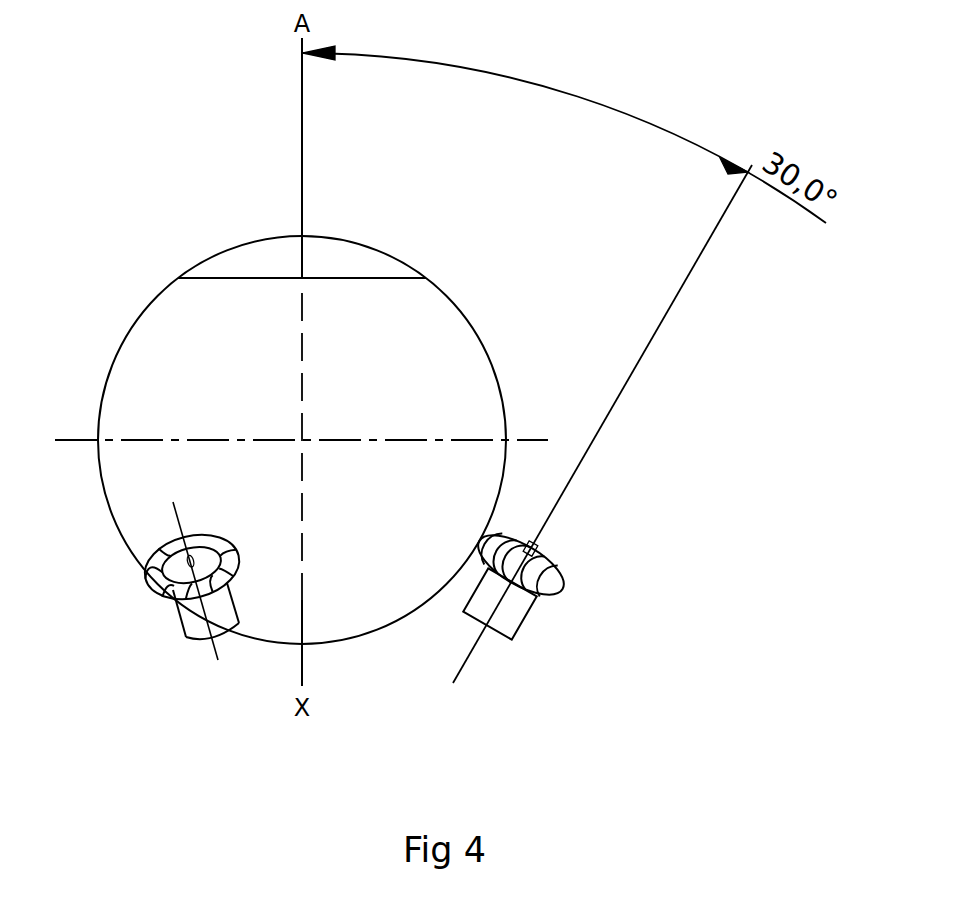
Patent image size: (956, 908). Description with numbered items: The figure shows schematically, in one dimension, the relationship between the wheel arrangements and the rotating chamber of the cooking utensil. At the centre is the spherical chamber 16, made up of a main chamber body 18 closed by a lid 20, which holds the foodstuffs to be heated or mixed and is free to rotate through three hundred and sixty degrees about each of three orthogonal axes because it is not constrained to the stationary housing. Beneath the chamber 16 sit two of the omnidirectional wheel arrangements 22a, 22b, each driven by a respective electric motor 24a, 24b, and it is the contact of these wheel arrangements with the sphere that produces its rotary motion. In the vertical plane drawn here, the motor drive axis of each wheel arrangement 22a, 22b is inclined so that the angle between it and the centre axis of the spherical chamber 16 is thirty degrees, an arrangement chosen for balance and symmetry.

The spherical chamber 16 is at (480, 272).
The main chamber body 18 is at (432, 373).
The lid 20 is at (282, 255).
The omnidirectional wheel arrangement 22a is at (573, 593).
The omnidirectional wheel arrangement 22b is at (135, 588).
The electric motor 24a is at (515, 613).
The electric motor 24b is at (198, 617).